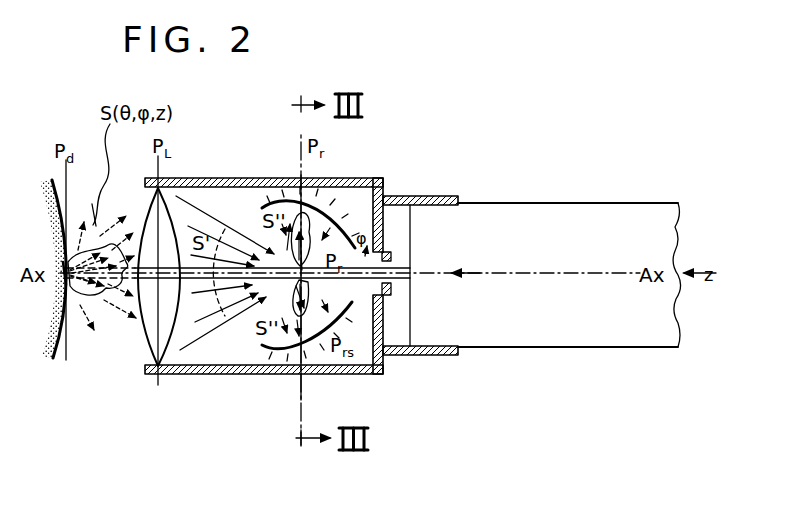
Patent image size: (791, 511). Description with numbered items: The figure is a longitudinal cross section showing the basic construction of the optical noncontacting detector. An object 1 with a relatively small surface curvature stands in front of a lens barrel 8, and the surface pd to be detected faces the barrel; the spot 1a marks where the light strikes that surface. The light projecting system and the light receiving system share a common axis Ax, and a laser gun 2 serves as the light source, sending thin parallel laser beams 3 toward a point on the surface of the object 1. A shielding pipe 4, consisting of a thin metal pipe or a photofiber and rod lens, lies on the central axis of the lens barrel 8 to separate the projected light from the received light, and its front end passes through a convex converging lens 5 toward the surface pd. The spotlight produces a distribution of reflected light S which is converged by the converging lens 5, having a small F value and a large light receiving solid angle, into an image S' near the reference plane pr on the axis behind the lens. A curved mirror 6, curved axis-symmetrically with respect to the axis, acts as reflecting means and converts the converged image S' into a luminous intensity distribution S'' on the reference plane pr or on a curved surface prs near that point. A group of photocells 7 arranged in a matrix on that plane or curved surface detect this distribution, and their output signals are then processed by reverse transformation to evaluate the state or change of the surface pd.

The object 1 is at (58, 343).
The illuminated spot on surface 1a is at (63, 292).
The laser gun 2 is at (580, 346).
The parallel laser beams 3 is at (118, 292).
The shielding pipe 4 is at (311, 274).
The convex converging lens 5 is at (150, 337).
The curved mirror 6 is at (310, 217).
The group of photocells 7 is at (266, 350).
The lens barrel 8 is at (222, 178).